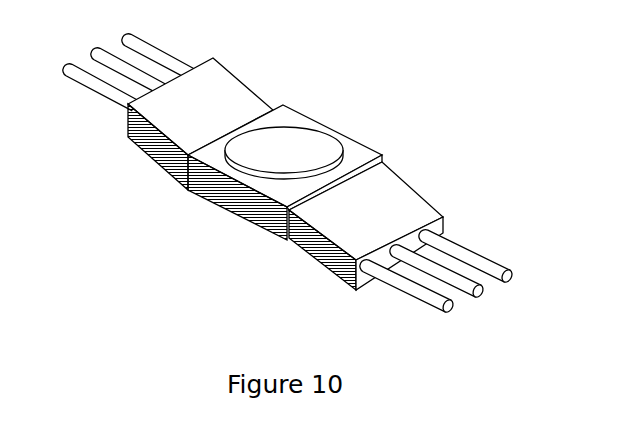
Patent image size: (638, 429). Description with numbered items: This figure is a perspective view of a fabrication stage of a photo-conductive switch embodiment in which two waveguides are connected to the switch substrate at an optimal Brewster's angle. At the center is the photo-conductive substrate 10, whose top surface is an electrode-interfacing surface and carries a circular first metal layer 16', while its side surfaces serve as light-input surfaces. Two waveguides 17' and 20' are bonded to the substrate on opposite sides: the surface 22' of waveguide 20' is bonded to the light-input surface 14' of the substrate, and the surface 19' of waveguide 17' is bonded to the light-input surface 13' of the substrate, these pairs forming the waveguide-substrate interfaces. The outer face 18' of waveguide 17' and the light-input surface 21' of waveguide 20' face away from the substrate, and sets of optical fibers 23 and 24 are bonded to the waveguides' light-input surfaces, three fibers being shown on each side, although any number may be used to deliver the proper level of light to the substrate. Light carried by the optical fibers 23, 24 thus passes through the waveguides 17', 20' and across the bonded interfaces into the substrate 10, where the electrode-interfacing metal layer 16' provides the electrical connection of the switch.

The photo-conductive substrate 10 is at (290, 173).
The light-input surface of the substrate 13' is at (322, 250).
The light-input surface of the substrate 14' is at (223, 197).
The first metal layer 16' is at (266, 140).
The waveguide 17' is at (374, 240).
The end face of second end block 18' is at (399, 270).
The waveguide surface 19' is at (352, 168).
The waveguide 20' is at (195, 116).
The light-input surface of the waveguide 21' is at (142, 147).
The waveguide surface 22' is at (289, 159).
The optical fibers 23 is at (523, 281).
The optical fibers 24 is at (138, 25).